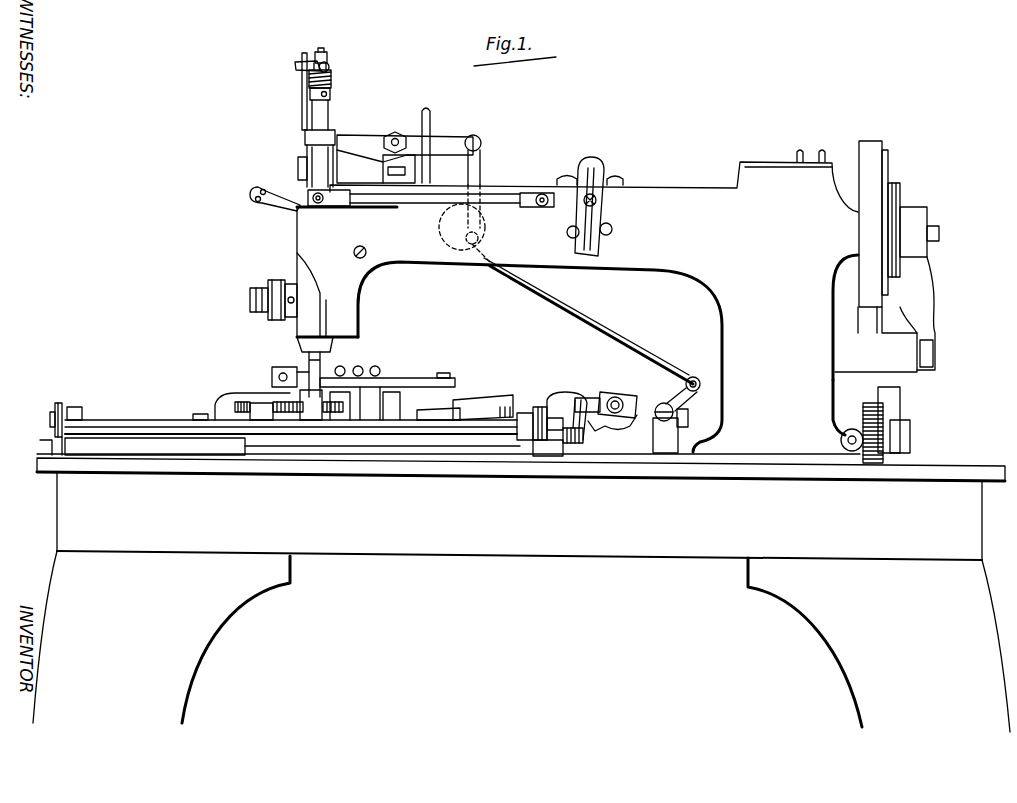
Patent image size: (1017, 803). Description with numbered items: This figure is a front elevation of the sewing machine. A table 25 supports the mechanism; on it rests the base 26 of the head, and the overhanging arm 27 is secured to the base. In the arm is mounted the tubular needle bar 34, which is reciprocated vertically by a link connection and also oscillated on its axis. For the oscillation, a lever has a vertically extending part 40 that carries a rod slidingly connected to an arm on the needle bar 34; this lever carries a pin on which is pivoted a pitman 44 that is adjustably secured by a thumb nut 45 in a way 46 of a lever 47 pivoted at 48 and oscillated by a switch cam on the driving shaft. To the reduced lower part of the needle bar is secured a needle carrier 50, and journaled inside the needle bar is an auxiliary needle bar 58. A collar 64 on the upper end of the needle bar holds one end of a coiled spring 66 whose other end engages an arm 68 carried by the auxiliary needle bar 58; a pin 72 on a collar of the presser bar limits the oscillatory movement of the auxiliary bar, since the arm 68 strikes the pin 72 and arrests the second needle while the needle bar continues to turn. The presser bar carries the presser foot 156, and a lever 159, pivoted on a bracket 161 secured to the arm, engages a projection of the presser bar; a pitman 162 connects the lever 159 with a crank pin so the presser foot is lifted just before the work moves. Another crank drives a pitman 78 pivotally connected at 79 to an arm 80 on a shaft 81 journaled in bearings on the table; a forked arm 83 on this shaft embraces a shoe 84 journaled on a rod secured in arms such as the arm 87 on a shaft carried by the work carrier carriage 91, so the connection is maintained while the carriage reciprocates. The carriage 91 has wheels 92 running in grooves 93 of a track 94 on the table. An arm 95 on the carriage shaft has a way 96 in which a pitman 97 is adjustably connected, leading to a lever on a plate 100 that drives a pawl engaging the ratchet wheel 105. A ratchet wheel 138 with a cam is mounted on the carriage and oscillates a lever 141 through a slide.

The table 25 is at (963, 471).
The base of the head 26 is at (736, 457).
The arm 27 is at (554, 301).
The tubular needle bar 34 is at (330, 110).
The vertically extending part 40 is at (306, 143).
The pitman 44 is at (417, 205).
The thumb nut 45 is at (574, 177).
The way 46 is at (575, 240).
The lever 47 is at (600, 206).
The pivot 48 is at (600, 167).
The needle carrier 50 is at (300, 364).
The auxiliary needle bar 58 is at (327, 57).
The collar 64 is at (310, 95).
The coiled spring 66 is at (331, 79).
The arm 68 is at (295, 66).
The pin 72 is at (303, 52).
The pitman 78 is at (579, 312).
The pivot 79 is at (696, 377).
The arm 80 is at (700, 397).
The shaft 81 is at (676, 413).
The forked arm 83 is at (645, 388).
The shoe 84 is at (625, 394).
The arm 87 is at (592, 398).
The work carrier carriage 91 is at (152, 423).
The wheels 92 is at (60, 403).
The grooves 93 is at (50, 420).
The track 94 is at (40, 448).
The arm 95 is at (580, 446).
The way 96 is at (581, 414).
The pitman 97 is at (555, 410).
The plate 100 is at (441, 412).
The ratchet wheel 105 is at (510, 400).
The ratchet wheel 138 is at (216, 405).
The lever 141 is at (405, 378).
The presser foot 156 is at (312, 418).
The lever 159 is at (441, 137).
The bracket 161 is at (388, 166).
The pitman 162 is at (481, 166).